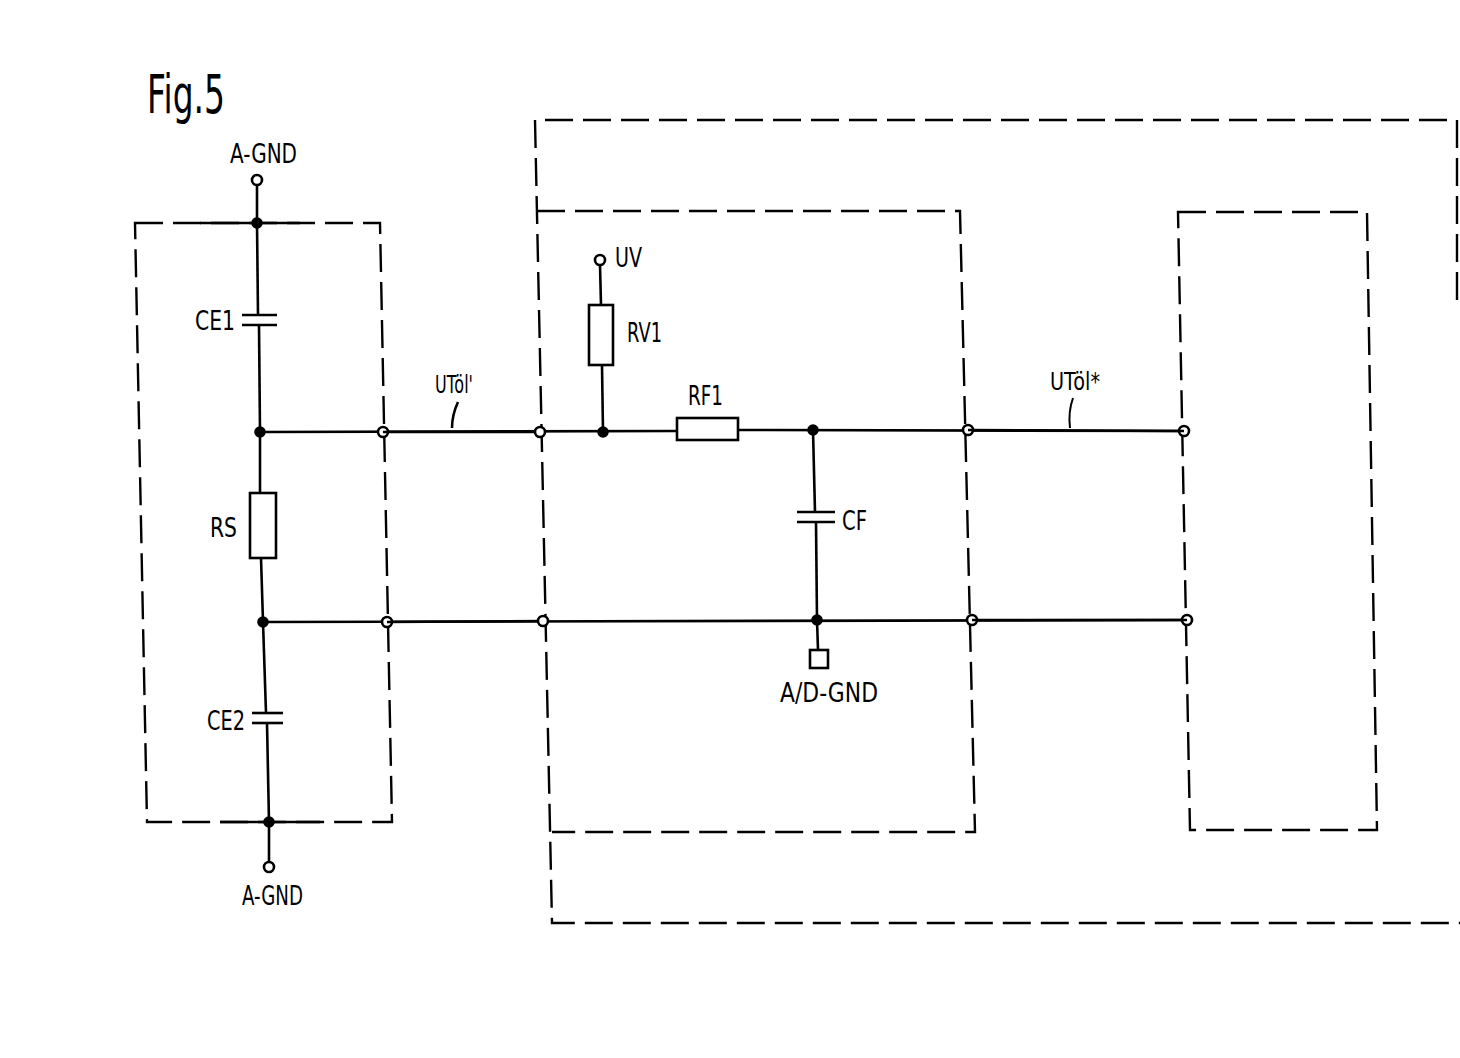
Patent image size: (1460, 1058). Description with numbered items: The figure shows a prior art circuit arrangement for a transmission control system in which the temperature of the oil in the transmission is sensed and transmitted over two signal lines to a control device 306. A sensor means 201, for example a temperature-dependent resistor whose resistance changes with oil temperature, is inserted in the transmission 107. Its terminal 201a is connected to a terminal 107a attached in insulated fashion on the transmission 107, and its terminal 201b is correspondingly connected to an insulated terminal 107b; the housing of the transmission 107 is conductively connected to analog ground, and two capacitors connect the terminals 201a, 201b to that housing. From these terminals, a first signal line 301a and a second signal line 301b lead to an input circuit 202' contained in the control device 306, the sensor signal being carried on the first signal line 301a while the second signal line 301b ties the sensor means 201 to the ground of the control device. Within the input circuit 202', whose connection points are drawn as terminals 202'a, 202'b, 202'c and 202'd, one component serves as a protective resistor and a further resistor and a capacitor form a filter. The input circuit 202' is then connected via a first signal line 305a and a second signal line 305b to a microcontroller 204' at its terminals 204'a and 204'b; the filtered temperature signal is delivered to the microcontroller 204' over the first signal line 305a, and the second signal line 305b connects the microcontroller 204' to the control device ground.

The transmission 107 is at (340, 223).
The terminal 107a is at (386, 427).
The terminal 107b is at (390, 617).
The sensor means 201 is at (277, 520).
The terminal 201a is at (262, 428).
The terminal 201b is at (266, 617).
The input circuit 202' is at (774, 491).
The evaluation circuit input terminal 202'a is at (510, 389).
The evaluation circuit input terminal 202'b is at (512, 583).
The evaluation circuit output terminal 202'c is at (995, 388).
The evaluation circuit output terminal 202'd is at (1002, 580).
The microcontroller 204' is at (1280, 490).
The A/D converter input terminal 204'a is at (1151, 389).
The A/D converter input terminal 204'b is at (1153, 579).
The first signal line 301a is at (455, 435).
The second signal line 301b is at (462, 624).
The first signal line 305a is at (1080, 432).
The second signal line 305b is at (1073, 622).
The control device 306 is at (1342, 120).